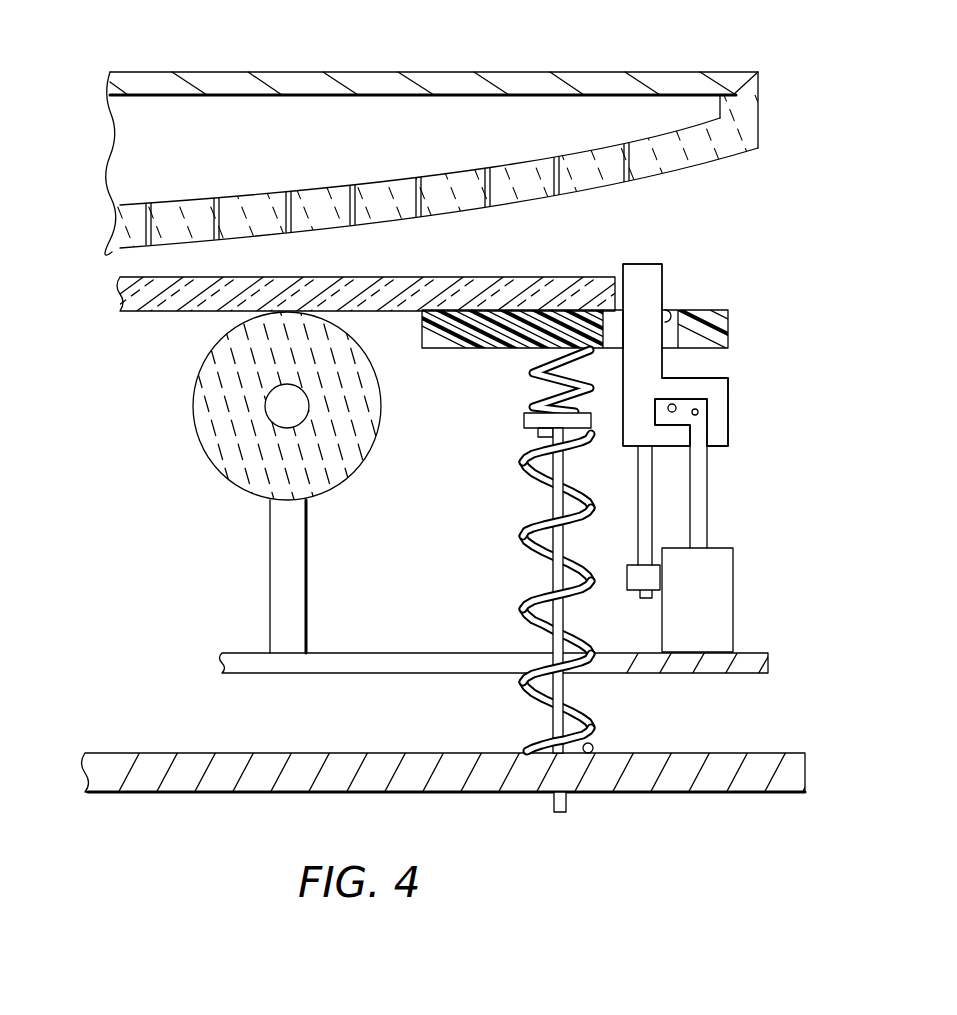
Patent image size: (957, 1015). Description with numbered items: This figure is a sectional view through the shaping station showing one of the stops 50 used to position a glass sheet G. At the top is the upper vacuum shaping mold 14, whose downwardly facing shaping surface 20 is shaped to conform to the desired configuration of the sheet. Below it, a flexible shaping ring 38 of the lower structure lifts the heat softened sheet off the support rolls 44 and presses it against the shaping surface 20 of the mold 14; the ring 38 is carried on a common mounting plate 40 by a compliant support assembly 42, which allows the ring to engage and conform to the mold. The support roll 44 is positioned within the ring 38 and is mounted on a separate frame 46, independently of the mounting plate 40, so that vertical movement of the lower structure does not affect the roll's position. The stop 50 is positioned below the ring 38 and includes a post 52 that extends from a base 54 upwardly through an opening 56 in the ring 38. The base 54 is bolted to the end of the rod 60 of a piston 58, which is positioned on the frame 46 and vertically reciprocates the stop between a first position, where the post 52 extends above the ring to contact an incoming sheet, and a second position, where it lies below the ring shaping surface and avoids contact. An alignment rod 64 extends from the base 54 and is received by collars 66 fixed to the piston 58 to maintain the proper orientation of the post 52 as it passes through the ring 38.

The upper vacuum shaping mold 14 is at (361, 71).
The shaping surface 20 is at (450, 219).
The glass sheet G is at (120, 290).
The shaping ring 38 is at (728, 333).
The stop 50 is at (771, 366).
The post 52 is at (663, 267).
The base 54 is at (729, 412).
The opening 56 is at (672, 308).
The piston 58 is at (735, 582).
The rod 60 is at (707, 476).
The alignment rod 64 is at (638, 469).
The collar 66 is at (637, 565).
The compliant support assembly 42 is at (528, 531).
The support roll 44 is at (190, 413).
The frame 46 is at (450, 677).
The mounting plate 40 is at (712, 793).